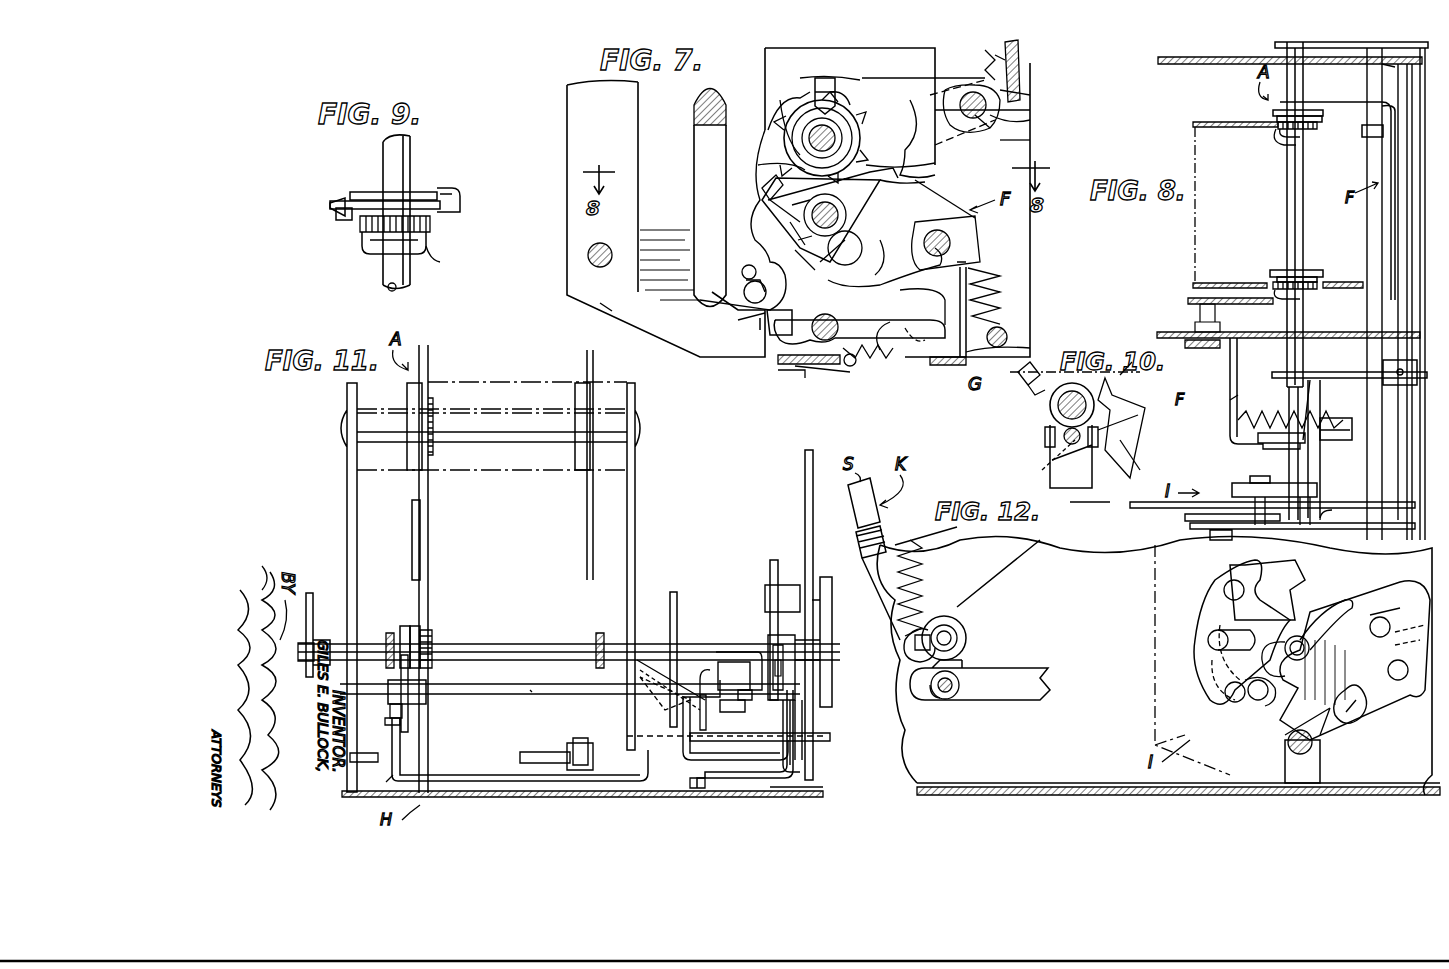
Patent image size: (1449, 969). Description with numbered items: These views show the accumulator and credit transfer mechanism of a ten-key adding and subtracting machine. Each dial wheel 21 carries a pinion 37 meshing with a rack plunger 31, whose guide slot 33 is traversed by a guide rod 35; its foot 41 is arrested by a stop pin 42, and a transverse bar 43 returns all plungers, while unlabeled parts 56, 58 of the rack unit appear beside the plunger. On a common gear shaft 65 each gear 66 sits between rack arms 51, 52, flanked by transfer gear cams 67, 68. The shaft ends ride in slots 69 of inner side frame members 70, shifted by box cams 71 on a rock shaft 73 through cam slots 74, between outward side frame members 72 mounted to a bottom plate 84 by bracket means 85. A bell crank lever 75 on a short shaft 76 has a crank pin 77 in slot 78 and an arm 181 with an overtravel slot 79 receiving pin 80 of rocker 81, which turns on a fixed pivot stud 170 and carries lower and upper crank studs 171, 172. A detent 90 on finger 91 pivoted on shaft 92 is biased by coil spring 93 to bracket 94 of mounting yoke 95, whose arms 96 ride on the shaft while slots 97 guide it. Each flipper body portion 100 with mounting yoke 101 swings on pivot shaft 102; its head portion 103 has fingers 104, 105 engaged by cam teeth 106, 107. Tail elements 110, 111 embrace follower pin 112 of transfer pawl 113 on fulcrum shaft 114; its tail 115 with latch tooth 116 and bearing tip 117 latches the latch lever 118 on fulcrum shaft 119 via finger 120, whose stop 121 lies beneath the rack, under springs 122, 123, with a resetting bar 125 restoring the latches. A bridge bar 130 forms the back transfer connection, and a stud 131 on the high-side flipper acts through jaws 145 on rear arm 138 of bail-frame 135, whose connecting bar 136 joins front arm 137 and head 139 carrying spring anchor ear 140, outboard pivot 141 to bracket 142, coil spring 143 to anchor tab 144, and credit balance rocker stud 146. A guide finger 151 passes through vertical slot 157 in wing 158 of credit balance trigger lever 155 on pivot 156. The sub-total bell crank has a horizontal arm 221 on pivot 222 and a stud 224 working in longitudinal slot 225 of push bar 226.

In FIG. 11, the dial wheel 21 is at (407, 394).
In FIG. 7, the rack plunger 31 is at (638, 137).
In FIG. 8, the rack plunger 31 is at (1222, 128).
In FIG. 11, the rack plunger 31 is at (428, 358).
In FIG. 7, the guide slot 33 is at (694, 255).
In FIG. 7, the guide rod 35 is at (694, 113).
In FIG. 11, the pinion 37 is at (436, 404).
In FIG. 7, the projecting foot 41 is at (607, 308).
In FIG. 8, the projecting foot 41 is at (1190, 300).
In FIG. 8, the stop pin 42 is at (1198, 317).
In FIG. 7, the transverse bar 43 is at (603, 243).
In FIG. 7, the rack arm 51 is at (742, 325).
In FIG. 8, the rack arm 52 is at (1348, 283).
In FIG. 7, the roller 56 is at (744, 289).
In FIG. 7, the pin 58 is at (742, 272).
In FIG. 7, the common gear shaft 65 is at (802, 135).
In FIG. 8, the common gear shaft 65 is at (1287, 210).
In FIG. 11, the common gear shaft 65 is at (482, 646).
In FIG. 12, the common gear shaft 65 is at (1297, 636).
In FIG. 9, the accumulator gear 66 is at (437, 258).
In FIG. 7, the accumulator gear 66 is at (830, 118).
In FIG. 8, the accumulator gear 66 is at (1314, 130).
In FIG. 11, the accumulator gear 66 is at (432, 630).
In FIG. 9, the forward transfer gear cam 67 is at (430, 218).
In FIG. 7, the forward transfer gear cam 67 is at (800, 98).
In FIG. 8, the forward transfer gear cam 67 is at (1277, 118).
In FIG. 11, the forward transfer gear cam 67 is at (402, 626).
In FIG. 9, the rearward transfer gear cam 68 is at (358, 196).
In FIG. 8, the rearward transfer gear cam 68 is at (1323, 118).
In FIG. 11, the rearward transfer gear cam 68 is at (422, 600).
In FIG. 7, the slot 69 is at (885, 126).
In FIG. 8, the slot 69 is at (1280, 132).
In FIG. 12, the slot 69 is at (1310, 655).
In FIG. 7, the inner side frame member 70 is at (580, 98).
In FIG. 8, the inner side frame member 70 is at (1198, 64).
In FIG. 11, the inner side frame member 70 is at (347, 512).
In FIG. 12, the inner side frame member 70 is at (1145, 745).
In FIG. 8, the box cam 71 is at (1300, 50).
In FIG. 11, the box cam 71 is at (322, 602).
In FIG. 12, the box cam 71 is at (1360, 615).
In FIG. 8, the outward side frame member 72 is at (1413, 506).
In FIG. 11, the outward side frame member 72 is at (805, 468).
In FIG. 12, the outward side frame member 72 is at (1072, 550).
In FIG. 8, the rock shaft 73 is at (1407, 185).
In FIG. 12, the rock shaft 73 is at (1400, 680).
In FIG. 12, the cam slot 74 is at (1345, 608).
In FIG. 8, the bell crank lever 75 is at (1322, 470).
In FIG. 11, the bell crank lever 75 is at (750, 779).
In FIG. 12, the bell crank lever 75 is at (1310, 790).
In FIG. 8, the short shaft 76 is at (1330, 508).
In FIG. 11, the short shaft 76 is at (830, 742).
In FIG. 12, the short shaft 76 is at (1298, 760).
In FIG. 11, the crank pin 77 is at (670, 712).
In FIG. 12, the crank pin 77 is at (1350, 720).
In FIG. 12, the slot 78 is at (1375, 710).
In FIG. 12, the overtravel slot 79 is at (1268, 705).
In FIG. 8, the pin 80 is at (1248, 478).
In FIG. 11, the pin 80 is at (805, 703).
In FIG. 12, the pin 80 is at (1255, 700).
In FIG. 8, the rocker 81 is at (1285, 480).
In FIG. 11, the rocker 81 is at (835, 575).
In FIG. 12, the rocker 81 is at (1232, 704).
In FIG. 11, the bottom plate 84 is at (810, 800).
In FIG. 11, the bracket means 85 is at (700, 790).
In FIG. 7, the detent 90 is at (828, 80).
In FIG. 7, the finger 91 is at (915, 78).
In FIG. 8, the finger 91 is at (1364, 130).
In FIG. 7, the shaft 92 is at (1010, 142).
In FIG. 8, the shaft 92 is at (1382, 177).
In FIG. 12, the shaft 92 is at (1400, 615).
In FIG. 7, the coil spring 93 is at (985, 56).
In FIG. 7, the bracket 94 is at (1018, 44).
In FIG. 8, the bracket 94 is at (1407, 208).
In FIG. 7, the mounting yoke 95 is at (1020, 102).
In FIG. 8, the mounting yoke 95 is at (1398, 150).
In FIG. 7, the yoke arm 96 is at (985, 130).
In FIG. 8, the yoke arm 96 is at (1325, 104).
In FIG. 11, the yoke arm 96 is at (386, 634).
In FIG. 7, the slot 97 is at (1030, 126).
In FIG. 8, the slot 97 is at (1385, 64).
In FIG. 12, the slot 97 is at (1410, 625).
In FIG. 9, the flipper body portion 100 is at (408, 200).
In FIG. 7, the flipper body portion 100 is at (865, 208).
In FIG. 10, the flipper body portion 100 is at (1118, 410).
In FIG. 11, the flipper body portion 100 is at (410, 727).
In FIG. 9, the mounting yoke 101 is at (362, 246).
In FIG. 7, the mounting yoke 101 is at (810, 202).
In FIG. 8, the mounting yoke 101 is at (1282, 135).
In FIG. 11, the mounting yoke 101 is at (428, 683).
In FIG. 9, the pivot shaft 102 is at (396, 289).
In FIG. 7, the pivot shaft 102 is at (810, 214).
In FIG. 10, the pivot shaft 102 is at (1050, 403).
In FIG. 11, the pivot shaft 102 is at (540, 700).
In FIG. 7, the head portion 103 is at (758, 180).
In FIG. 10, the head portion 103 is at (1020, 374).
In FIG. 9, the actuator and stop finger 104 is at (336, 198).
In FIG. 7, the actuator and stop finger 104 is at (775, 200).
In FIG. 9, the actuator-stop finger 105 is at (448, 194).
In FIG. 7, the actuator-stop finger 105 is at (880, 187).
In FIG. 9, the cam tooth 106 is at (337, 218).
In FIG. 7, the cam tooth 106 is at (760, 166).
In FIG. 9, the cam tooth 107 is at (455, 204).
In FIG. 7, the cam tooth 107 is at (920, 172).
In FIG. 7, the tail element 110 is at (880, 283).
In FIG. 10, the tail element 110 is at (1135, 450).
In FIG. 7, the tail element 111 is at (790, 256).
In FIG. 7, the follower pin 112 is at (848, 268).
In FIG. 7, the transfer pawl 113 is at (902, 232).
In FIG. 7, the fulcrum shaft 114 is at (955, 240).
In FIG. 7, the pawl tail 115 is at (968, 310).
In FIG. 7, the latch tooth 116 is at (1040, 308).
In FIG. 7, the bearing tip 117 is at (1020, 340).
In FIG. 7, the latch lever 118 is at (808, 345).
In FIG. 7, the fulcrum shaft 119 is at (808, 366).
In FIG. 11, the fulcrum shaft 119 is at (530, 752).
In FIG. 7, the transverse finger 120 is at (920, 350).
In FIG. 7, the stop 121 is at (760, 335).
In FIG. 7, the coil spring 122 is at (990, 322).
In FIG. 7, the coil spring 123 is at (860, 365).
In FIG. 7, the resetting bar 125 is at (835, 380).
In FIG. 7, the bridge bar 130 is at (950, 366).
In FIG. 10, the stud 131 is at (1046, 426).
In FIG. 11, the stud 131 is at (388, 727).
In FIG. 11, the bail-frame 135 is at (389, 790).
In FIG. 11, the connecting bar 136 is at (518, 798).
In FIG. 11, the front arm 137 is at (650, 770).
In FIG. 10, the rear arm 138 is at (1050, 455).
In FIG. 11, the rear arm 138 is at (400, 760).
In FIG. 8, the head 139 is at (1268, 449).
In FIG. 11, the head 139 is at (742, 662).
In FIG. 8, the spring anchor ear 140 is at (1352, 428).
In FIG. 11, the spring anchor ear 140 is at (646, 710).
In FIG. 11, the outboard pivot 141 is at (738, 693).
In FIG. 8, the bracket 142 is at (1237, 352).
In FIG. 11, the bracket 142 is at (712, 695).
In FIG. 8, the coil spring 143 is at (1290, 412).
In FIG. 8, the anchor tab 144 is at (1238, 405).
In FIG. 11, the anchor tab 144 is at (708, 668).
In FIG. 10, the jaws 145 is at (1132, 418).
In FIG. 11, the jaws 145 is at (390, 708).
In FIG. 11, the credit balance rocker stud 146 is at (750, 652).
In FIG. 11, the guide finger 151 is at (782, 667).
In FIG. 11, the credit balance trigger lever 155 is at (775, 558).
In FIG. 11, the pivot 156 is at (766, 596).
In FIG. 11, the vertical slot 157 is at (785, 652).
In FIG. 11, the wing 158 is at (770, 638).
In FIG. 12, the fixed pivot stud 170 is at (1210, 655).
In FIG. 12, the lower crank stud 171 is at (1240, 700).
In FIG. 12, the upper crank stud 172 is at (1264, 590).
In FIG. 11, the arm 181 is at (805, 730).
In FIG. 12, the horizontal arm 221 is at (942, 630).
In FIG. 12, the pivot 222 is at (952, 636).
In FIG. 12, the stud 224 is at (950, 695).
In FIG. 12, the longitudinal slot 225 is at (932, 698).
In FIG. 12, the push bar 226 is at (1020, 695).